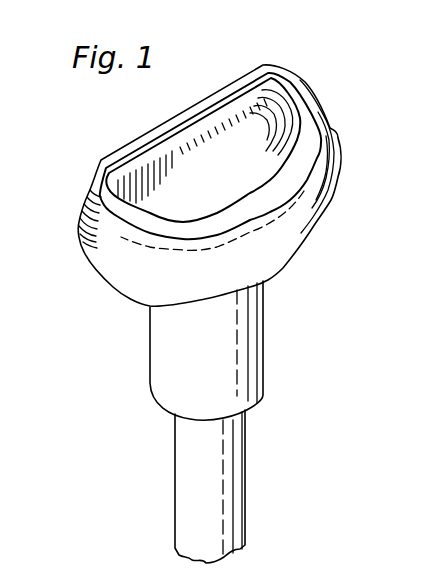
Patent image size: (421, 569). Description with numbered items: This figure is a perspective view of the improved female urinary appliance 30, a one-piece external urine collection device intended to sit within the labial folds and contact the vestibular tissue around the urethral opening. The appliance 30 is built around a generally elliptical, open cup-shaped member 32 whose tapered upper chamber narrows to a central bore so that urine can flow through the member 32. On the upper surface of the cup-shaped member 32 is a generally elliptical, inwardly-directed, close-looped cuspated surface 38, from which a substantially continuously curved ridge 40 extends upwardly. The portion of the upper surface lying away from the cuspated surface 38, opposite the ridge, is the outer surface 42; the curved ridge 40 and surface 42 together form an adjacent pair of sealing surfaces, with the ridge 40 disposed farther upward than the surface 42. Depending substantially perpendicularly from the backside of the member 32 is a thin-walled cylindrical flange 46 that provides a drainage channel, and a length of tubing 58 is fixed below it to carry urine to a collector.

The appliance 30 is at (297, 259).
The cup-shaped member 32 is at (100, 280).
The cuspated surface 38 is at (303, 180).
The curved ridge 40 is at (300, 93).
The surface 42 is at (77, 210).
The cylindrical flange 46 is at (150, 362).
The tubing 58 is at (160, 487).